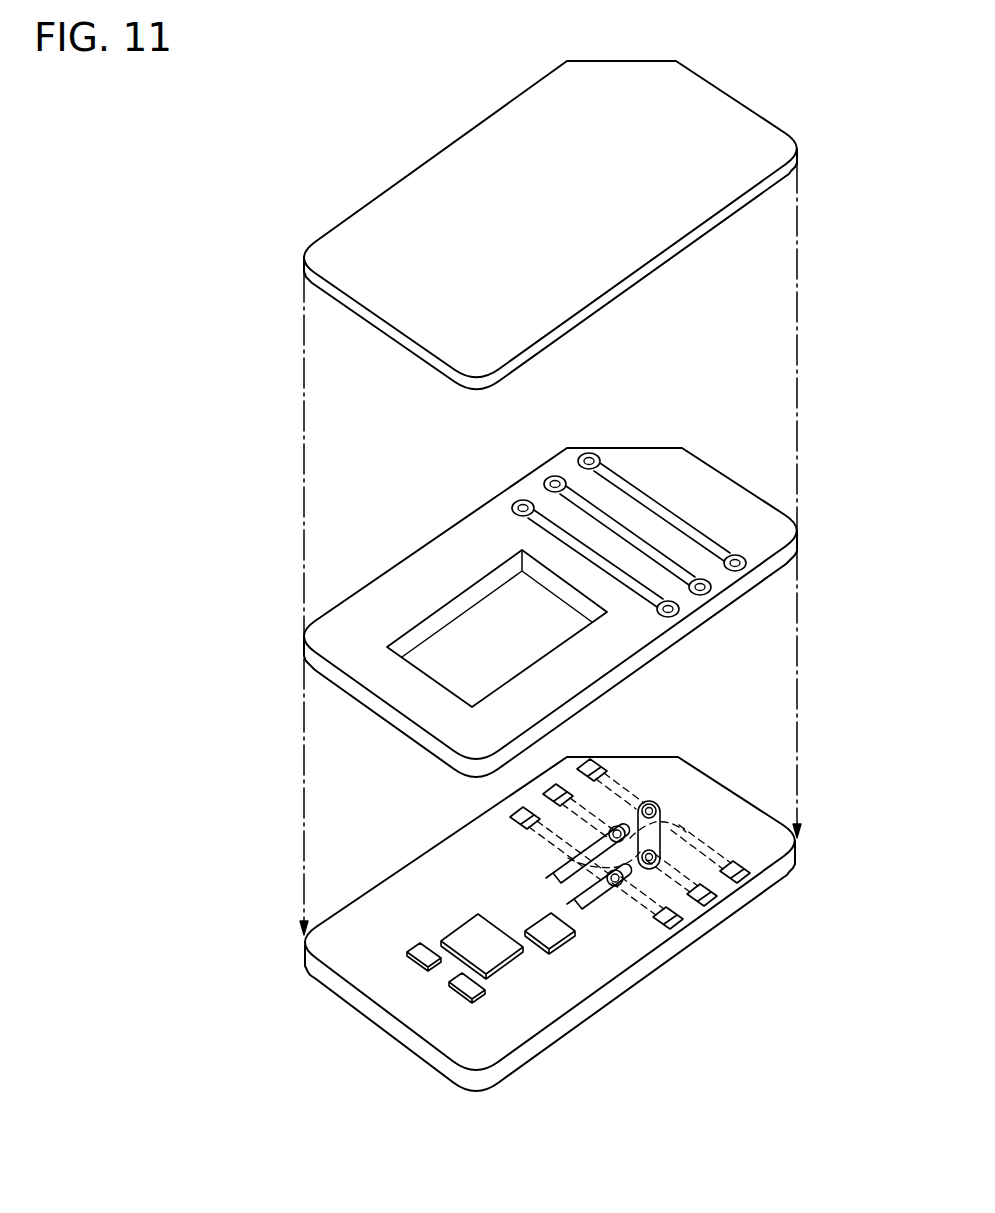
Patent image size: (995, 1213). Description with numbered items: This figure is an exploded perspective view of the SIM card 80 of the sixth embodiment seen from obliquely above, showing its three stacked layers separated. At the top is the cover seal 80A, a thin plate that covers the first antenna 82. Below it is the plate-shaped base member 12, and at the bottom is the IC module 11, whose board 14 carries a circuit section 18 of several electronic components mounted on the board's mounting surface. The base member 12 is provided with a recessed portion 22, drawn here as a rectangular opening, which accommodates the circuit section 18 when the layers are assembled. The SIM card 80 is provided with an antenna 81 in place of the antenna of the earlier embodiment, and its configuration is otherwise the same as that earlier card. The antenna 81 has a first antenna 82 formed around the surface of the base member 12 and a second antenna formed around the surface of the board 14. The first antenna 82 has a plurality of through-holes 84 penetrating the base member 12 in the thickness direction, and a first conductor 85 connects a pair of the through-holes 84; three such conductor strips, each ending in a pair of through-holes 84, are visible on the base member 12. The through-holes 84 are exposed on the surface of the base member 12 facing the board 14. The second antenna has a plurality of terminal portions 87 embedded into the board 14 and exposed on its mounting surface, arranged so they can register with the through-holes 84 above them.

The SIM card 80 is at (270, 748).
The cover seal 80A is at (420, 197).
The IC module 11 is at (550, 900).
The base member 12 is at (409, 550).
The board 14 is at (677, 790).
The circuit section 18 is at (507, 977).
The recessed portion 22 is at (457, 610).
The antenna 81 is at (648, 526).
The first antenna 82 is at (710, 533).
The through-holes 84 is at (589, 454).
The first conductor 85 is at (640, 490).
The terminal portions 87 is at (590, 763).